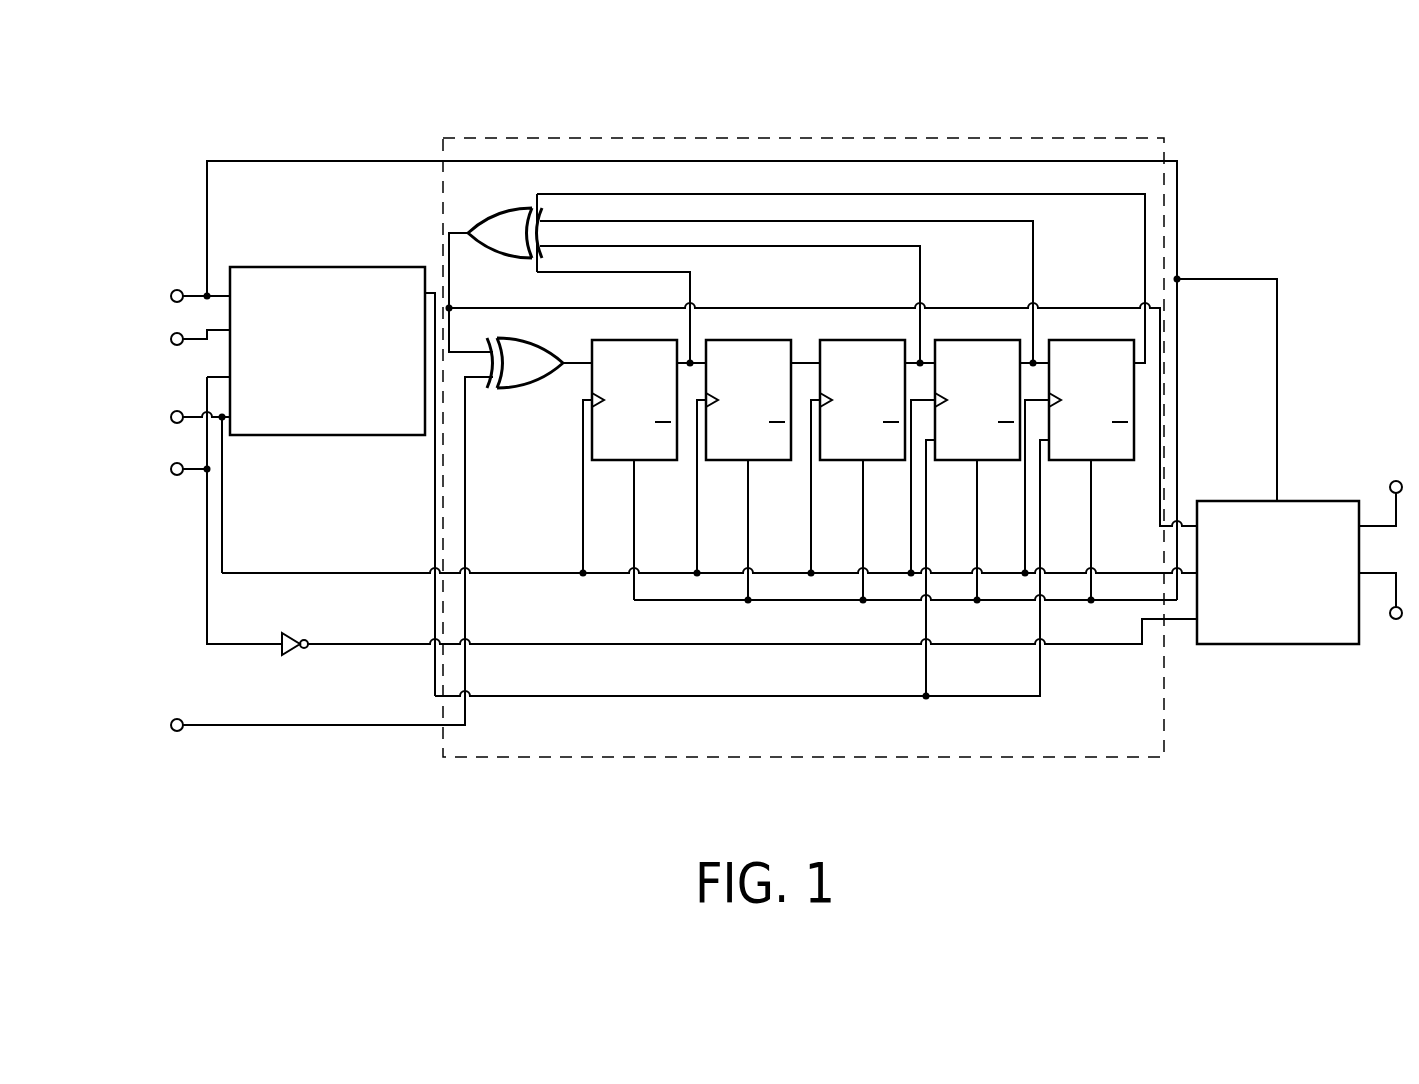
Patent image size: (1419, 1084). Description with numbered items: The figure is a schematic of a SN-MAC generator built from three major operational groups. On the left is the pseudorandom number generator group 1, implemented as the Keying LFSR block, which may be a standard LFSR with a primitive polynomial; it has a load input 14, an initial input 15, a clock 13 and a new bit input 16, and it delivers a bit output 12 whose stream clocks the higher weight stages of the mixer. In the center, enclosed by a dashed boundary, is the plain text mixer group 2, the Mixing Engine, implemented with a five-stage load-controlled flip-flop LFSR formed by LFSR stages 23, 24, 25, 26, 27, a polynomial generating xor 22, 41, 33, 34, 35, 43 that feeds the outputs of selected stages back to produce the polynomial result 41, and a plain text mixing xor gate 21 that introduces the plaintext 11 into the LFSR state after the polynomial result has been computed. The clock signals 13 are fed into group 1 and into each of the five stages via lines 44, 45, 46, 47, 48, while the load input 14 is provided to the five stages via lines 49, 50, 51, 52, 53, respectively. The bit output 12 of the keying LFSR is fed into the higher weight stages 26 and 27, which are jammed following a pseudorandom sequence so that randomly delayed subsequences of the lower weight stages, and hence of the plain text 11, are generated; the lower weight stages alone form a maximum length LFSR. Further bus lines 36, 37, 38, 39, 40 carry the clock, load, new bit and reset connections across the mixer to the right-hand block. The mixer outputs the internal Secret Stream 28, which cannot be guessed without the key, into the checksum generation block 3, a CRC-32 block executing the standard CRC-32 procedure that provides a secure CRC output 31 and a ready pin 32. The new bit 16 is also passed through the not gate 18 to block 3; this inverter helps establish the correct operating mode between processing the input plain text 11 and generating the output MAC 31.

The pseudorandom number generator group 1 is at (328, 267).
The plain text mixer group 2 is at (1166, 734).
The checksum generation block 3 is at (1277, 645).
The plain text 11 is at (171, 725).
The bit output 12 is at (434, 477).
The clock 13 is at (171, 417).
The load input 14 is at (171, 296).
The initial input 15 is at (171, 339).
The new bit input 16 is at (171, 469).
The not gate 18 is at (292, 634).
The plain text mixing xor gate 21 is at (542, 390).
The polynomial generating xor 22 is at (490, 258).
The LFSR stage 23 is at (606, 464).
The LFSR stage 24 is at (720, 464).
The LFSR stage 25 is at (835, 464).
The LFSR stage 26 is at (950, 464).
The LFSR stage 27 is at (1064, 464).
The Secret Stream 28 is at (1161, 389).
The secure CRC output 31 is at (1396, 481).
The ready pin 32 is at (1396, 655).
The polynomial generating xor line 33 is at (1084, 194).
The polynomial generating xor line 34 is at (970, 221).
The polynomial generating xor line 35 is at (762, 246).
The clock line 36 is at (548, 574).
The clear line 37 is at (688, 600).
The dump line 38 is at (760, 644).
The load line 39 is at (856, 696).
The reset line 40 is at (1228, 279).
The polynomial result 41 is at (466, 228).
The polynomial generating xor line 43 is at (614, 272).
The clock line 44 is at (583, 515).
The clock line 45 is at (697, 515).
The clock line 46 is at (811, 515).
The clock line 47 is at (911, 518).
The clock line 48 is at (1025, 518).
The load line 49 is at (634, 553).
The load line 50 is at (748, 553).
The load line 51 is at (863, 553).
The load line 52 is at (977, 553).
The load line 53 is at (1091, 553).